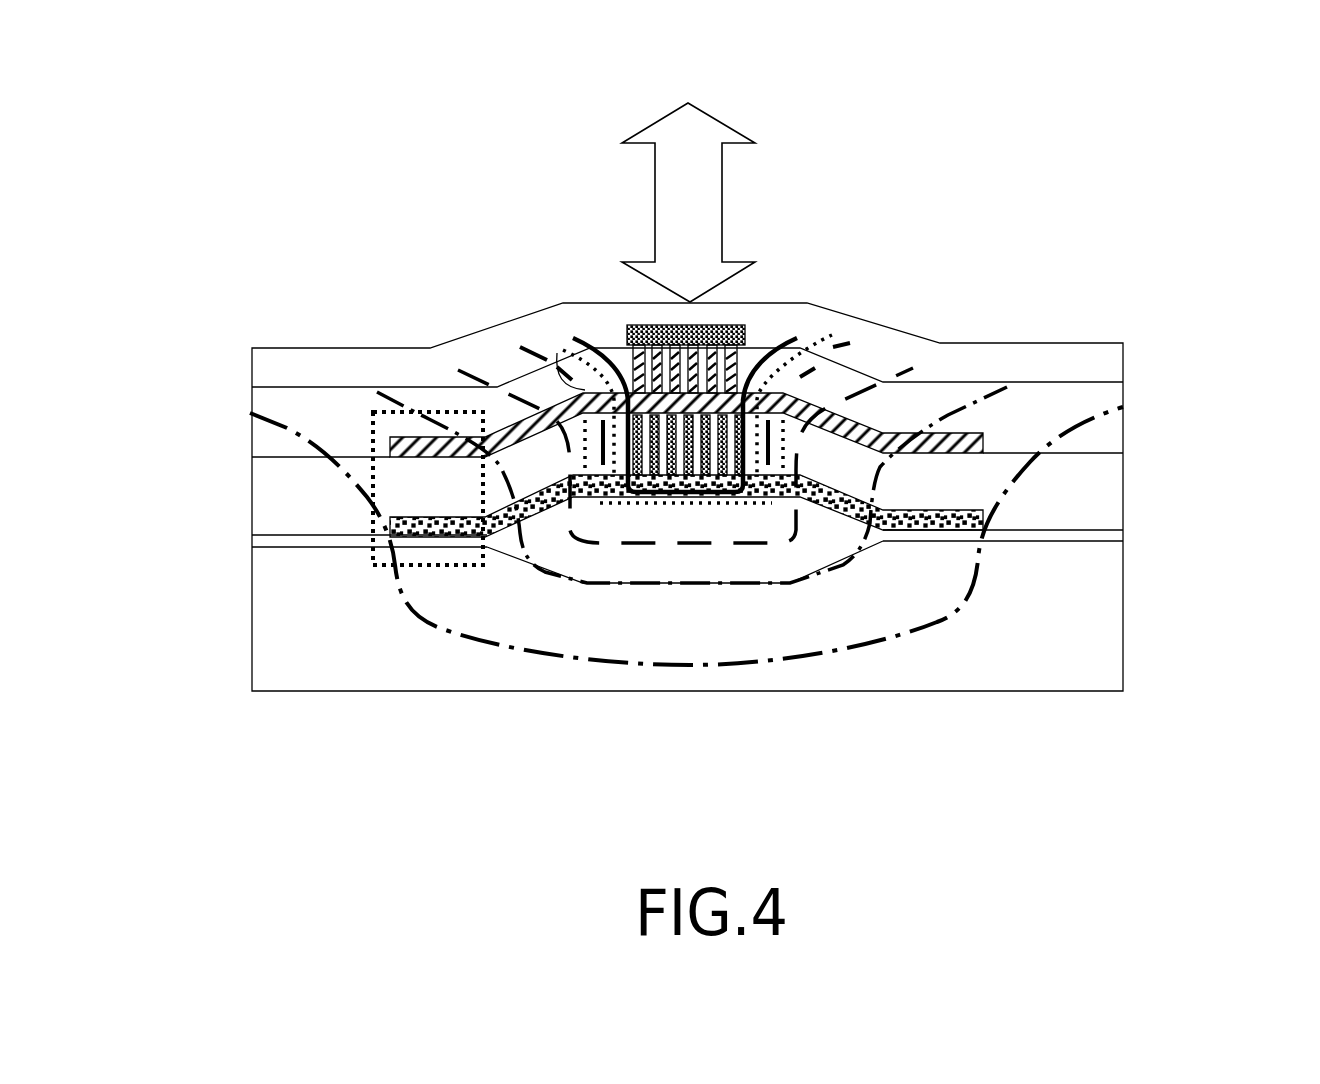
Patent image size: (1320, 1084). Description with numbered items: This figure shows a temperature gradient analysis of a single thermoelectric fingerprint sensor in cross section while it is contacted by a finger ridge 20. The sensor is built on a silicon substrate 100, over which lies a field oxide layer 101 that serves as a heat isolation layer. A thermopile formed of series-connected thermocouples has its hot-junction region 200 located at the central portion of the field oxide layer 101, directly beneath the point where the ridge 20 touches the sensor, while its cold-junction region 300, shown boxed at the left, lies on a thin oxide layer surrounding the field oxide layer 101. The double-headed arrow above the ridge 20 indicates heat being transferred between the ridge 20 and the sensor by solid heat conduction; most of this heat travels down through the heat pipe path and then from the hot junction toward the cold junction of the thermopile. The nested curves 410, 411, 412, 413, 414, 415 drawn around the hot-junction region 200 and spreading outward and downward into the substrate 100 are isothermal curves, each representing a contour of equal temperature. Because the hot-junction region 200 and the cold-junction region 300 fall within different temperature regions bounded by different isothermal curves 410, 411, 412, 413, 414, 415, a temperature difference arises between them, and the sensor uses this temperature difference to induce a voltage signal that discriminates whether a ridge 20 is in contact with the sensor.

The ridge 20 is at (707, 93).
The silicon substrate 100 is at (713, 653).
The field oxide layer 101 is at (717, 563).
The hot-junction region 200 is at (557, 353).
The cold-junction region 300 is at (370, 500).
The isothermal curve 410 is at (790, 337).
The isothermal curve 411 is at (830, 337).
The isothermal curve 412 is at (838, 342).
The isothermal curve 413 is at (913, 370).
The isothermal curve 414 is at (1007, 383).
The isothermal curve 415 is at (1123, 407).